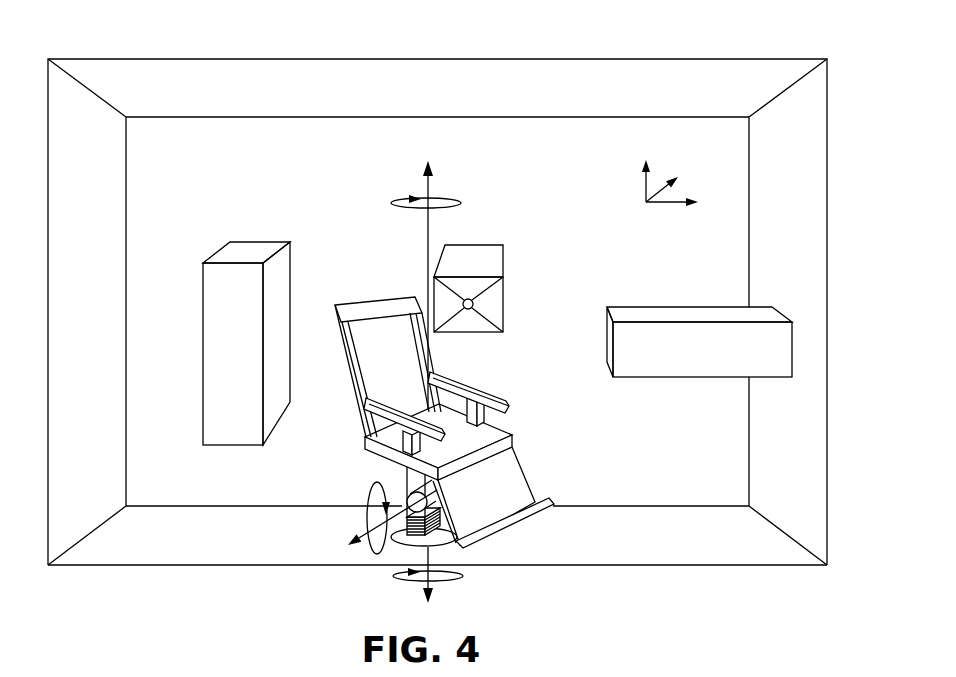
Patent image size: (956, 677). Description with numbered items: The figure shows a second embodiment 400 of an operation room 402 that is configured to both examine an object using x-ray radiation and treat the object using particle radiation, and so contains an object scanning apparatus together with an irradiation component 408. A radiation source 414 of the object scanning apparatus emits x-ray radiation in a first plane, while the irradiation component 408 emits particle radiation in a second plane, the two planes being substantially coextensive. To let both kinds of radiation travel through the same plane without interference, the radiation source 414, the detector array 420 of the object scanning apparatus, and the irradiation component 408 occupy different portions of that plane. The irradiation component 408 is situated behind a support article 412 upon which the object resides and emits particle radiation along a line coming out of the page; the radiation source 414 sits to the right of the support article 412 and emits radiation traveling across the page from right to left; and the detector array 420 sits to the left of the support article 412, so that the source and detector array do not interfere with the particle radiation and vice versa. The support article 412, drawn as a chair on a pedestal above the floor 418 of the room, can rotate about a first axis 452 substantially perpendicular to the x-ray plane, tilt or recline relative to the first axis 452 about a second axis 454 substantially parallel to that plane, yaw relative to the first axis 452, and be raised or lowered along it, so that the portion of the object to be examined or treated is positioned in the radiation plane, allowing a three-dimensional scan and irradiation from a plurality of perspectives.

The second embodiment 400 is at (683, 36).
The operation room 402 is at (147, 59).
The irradiation component 408 is at (503, 264).
The support article 412 is at (383, 297).
The radiation source 414 is at (672, 306).
The floor 418 is at (231, 527).
The detector array 420 is at (227, 253).
The first axis 452 is at (437, 170).
The second axis 454 is at (356, 536).